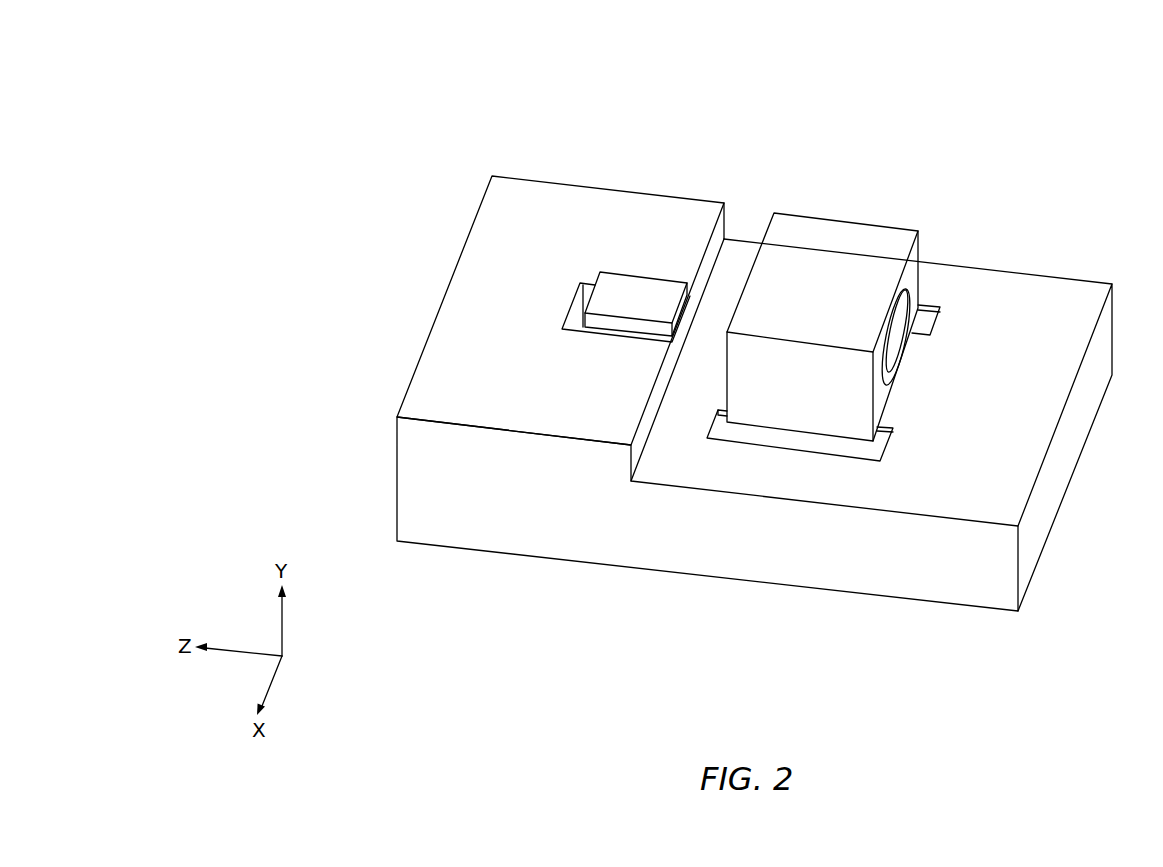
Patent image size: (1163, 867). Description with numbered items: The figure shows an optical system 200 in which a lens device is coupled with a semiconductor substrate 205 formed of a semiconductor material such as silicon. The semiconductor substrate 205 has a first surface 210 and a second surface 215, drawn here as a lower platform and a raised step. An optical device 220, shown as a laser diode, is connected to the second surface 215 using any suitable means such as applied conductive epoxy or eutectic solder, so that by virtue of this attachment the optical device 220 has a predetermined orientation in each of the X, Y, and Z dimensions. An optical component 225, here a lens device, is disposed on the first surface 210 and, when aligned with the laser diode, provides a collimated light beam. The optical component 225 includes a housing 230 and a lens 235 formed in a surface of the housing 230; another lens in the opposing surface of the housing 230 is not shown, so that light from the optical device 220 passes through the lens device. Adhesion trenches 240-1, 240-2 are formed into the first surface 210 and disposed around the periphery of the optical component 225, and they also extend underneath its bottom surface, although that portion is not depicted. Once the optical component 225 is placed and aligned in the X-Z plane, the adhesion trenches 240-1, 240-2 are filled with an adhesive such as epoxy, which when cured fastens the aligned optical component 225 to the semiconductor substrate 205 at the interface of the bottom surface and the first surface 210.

The optical system 200 is at (429, 66).
The semiconductor substrate 205 is at (1037, 513).
The first surface 210 is at (1063, 302).
The second surface 215 is at (518, 205).
The optical device 220 is at (642, 288).
The optical component 225 is at (808, 213).
The housing 230 is at (873, 245).
The lens 235 is at (892, 338).
The adhesion trench 240-1 is at (797, 442).
The adhesion trench 240-2 is at (925, 312).